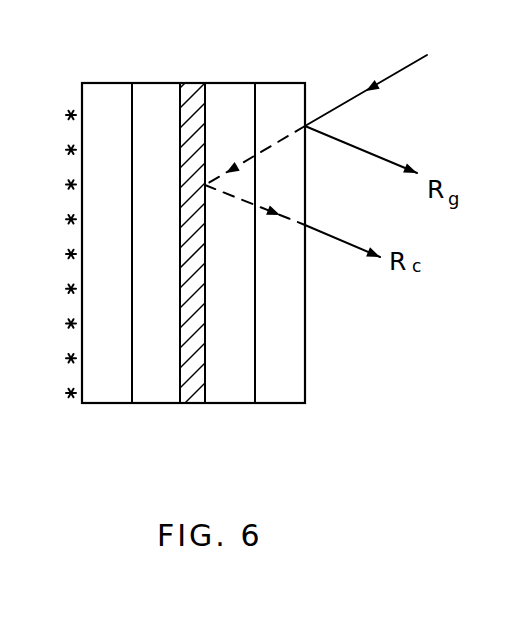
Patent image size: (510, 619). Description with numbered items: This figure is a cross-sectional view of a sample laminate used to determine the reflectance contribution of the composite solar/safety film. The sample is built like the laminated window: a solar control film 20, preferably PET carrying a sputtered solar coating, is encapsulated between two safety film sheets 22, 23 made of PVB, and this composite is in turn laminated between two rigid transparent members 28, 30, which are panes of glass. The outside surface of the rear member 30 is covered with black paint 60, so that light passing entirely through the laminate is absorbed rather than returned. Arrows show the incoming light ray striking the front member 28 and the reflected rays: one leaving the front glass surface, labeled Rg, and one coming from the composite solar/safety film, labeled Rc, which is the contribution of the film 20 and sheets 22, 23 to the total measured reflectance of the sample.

The solar control film 20 is at (192, 87).
The safety film sheet 22 is at (155, 393).
The safety film sheet 23 is at (232, 392).
The rigid transparent member 28 is at (285, 95).
The rigid transparent member 30 is at (108, 92).
The black paint 60 is at (66, 112).